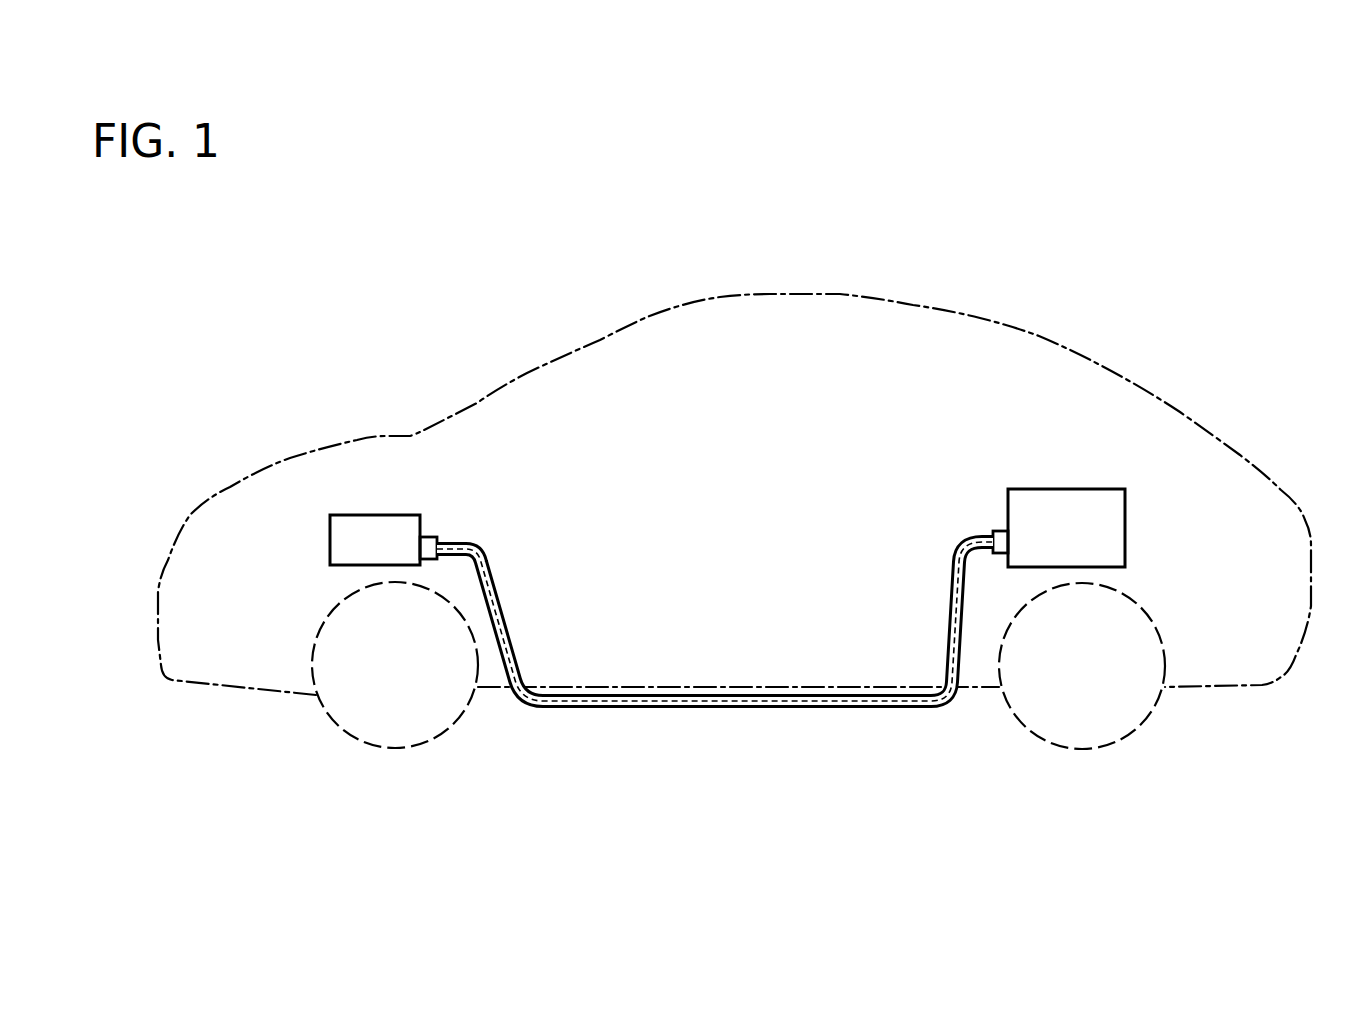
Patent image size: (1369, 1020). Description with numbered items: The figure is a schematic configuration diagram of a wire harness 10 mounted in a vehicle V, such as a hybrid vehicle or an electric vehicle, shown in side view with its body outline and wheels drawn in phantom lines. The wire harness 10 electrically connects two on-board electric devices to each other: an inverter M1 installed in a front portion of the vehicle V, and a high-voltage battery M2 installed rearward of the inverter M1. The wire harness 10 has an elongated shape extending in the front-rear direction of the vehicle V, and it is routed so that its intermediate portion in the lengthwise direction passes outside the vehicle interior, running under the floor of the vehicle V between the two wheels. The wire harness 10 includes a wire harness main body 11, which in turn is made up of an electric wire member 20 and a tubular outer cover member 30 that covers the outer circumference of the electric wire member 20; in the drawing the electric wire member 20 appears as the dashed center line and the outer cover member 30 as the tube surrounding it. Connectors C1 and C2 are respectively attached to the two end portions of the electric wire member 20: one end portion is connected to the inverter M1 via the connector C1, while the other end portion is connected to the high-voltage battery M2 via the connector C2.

The vehicle V is at (1039, 336).
The inverter M1 is at (379, 515).
The high-voltage battery M2 is at (1098, 489).
The connector C1 is at (430, 537).
The connector C2 is at (991, 531).
The wire harness 10 is at (720, 558).
The wire harness main body 11 is at (715, 621).
The electric wire member 20 is at (956, 587).
The outer cover member 30 is at (950, 620).